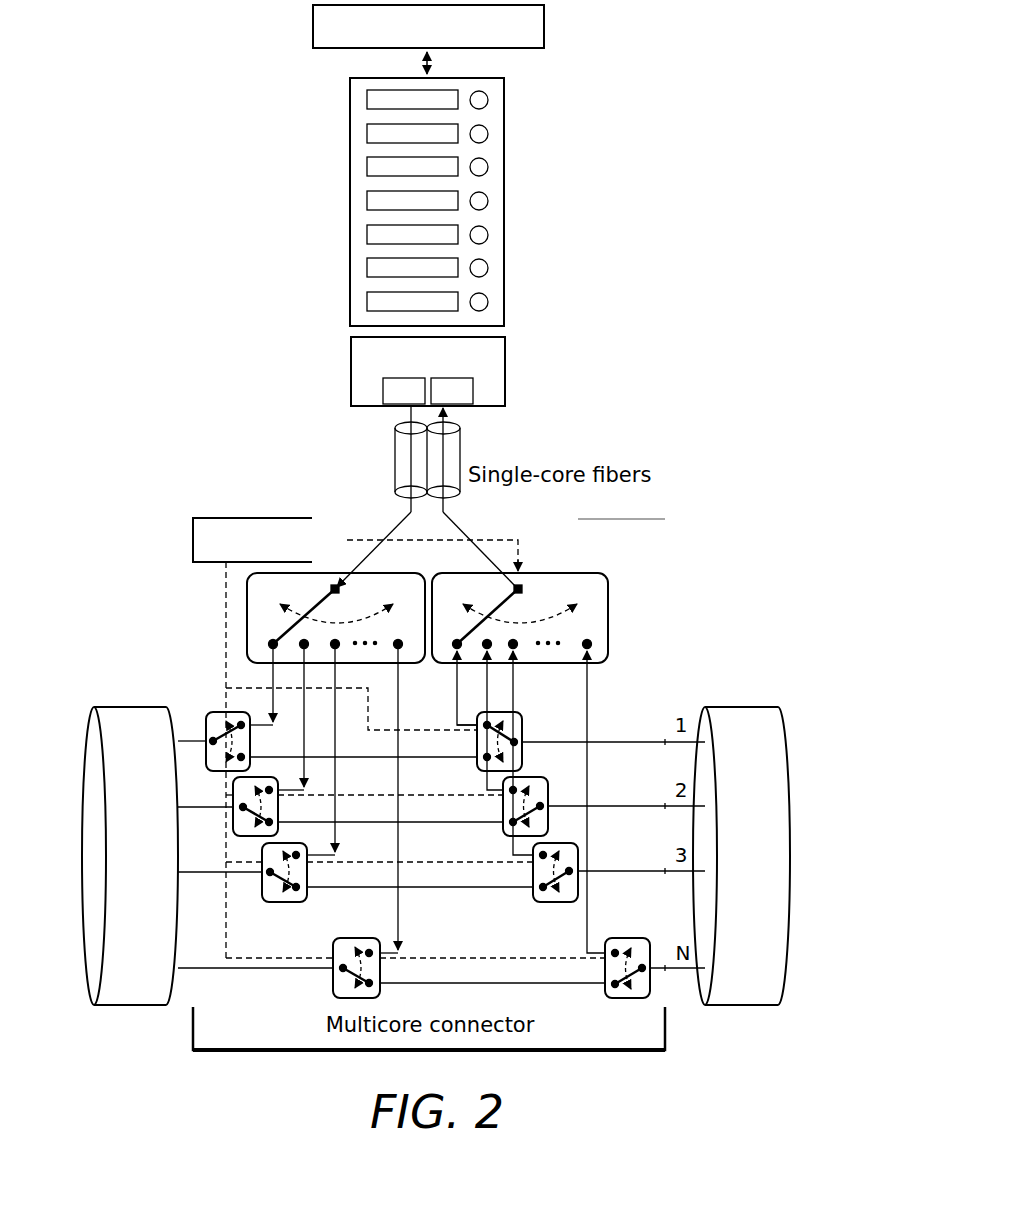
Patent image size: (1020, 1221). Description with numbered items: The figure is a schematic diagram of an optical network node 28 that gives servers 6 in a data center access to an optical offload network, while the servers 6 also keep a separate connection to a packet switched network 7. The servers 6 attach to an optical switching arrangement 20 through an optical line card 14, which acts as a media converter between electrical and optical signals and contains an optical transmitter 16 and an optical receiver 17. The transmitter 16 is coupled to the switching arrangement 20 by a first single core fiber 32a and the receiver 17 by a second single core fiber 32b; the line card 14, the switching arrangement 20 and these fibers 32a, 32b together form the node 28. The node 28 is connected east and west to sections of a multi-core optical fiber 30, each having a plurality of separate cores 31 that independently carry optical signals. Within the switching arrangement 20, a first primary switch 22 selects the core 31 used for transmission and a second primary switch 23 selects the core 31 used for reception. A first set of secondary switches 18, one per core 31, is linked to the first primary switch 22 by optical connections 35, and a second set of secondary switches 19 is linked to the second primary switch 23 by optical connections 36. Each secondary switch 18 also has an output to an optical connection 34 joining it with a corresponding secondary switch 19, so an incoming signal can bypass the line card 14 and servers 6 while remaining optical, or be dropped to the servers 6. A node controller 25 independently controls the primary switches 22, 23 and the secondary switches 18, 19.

The packet switched network 7 is at (545, 20).
The servers 6 is at (505, 85).
The optical line card 14 is at (505, 350).
The optical transmitter 16 is at (383, 388).
The optical receiver 17 is at (473, 388).
The first single core fiber 32a is at (395, 442).
The second single core fiber 32b is at (460, 441).
The optical network node 28 is at (182, 427).
The node controller 25 is at (195, 540).
The optical switching arrangement 20 is at (665, 538).
The first primary switch 22 is at (247, 612).
The second primary switch 23 is at (608, 612).
The first set of secondary switches 18 is at (206, 712).
The second set of secondary switches 19 is at (522, 715).
The multi-core optical fiber 30 is at (85, 727).
The cores 31 is at (178, 741).
The optical connection 34 is at (435, 892).
The optical connections 35 is at (338, 845).
The optical connections 36 is at (470, 730).